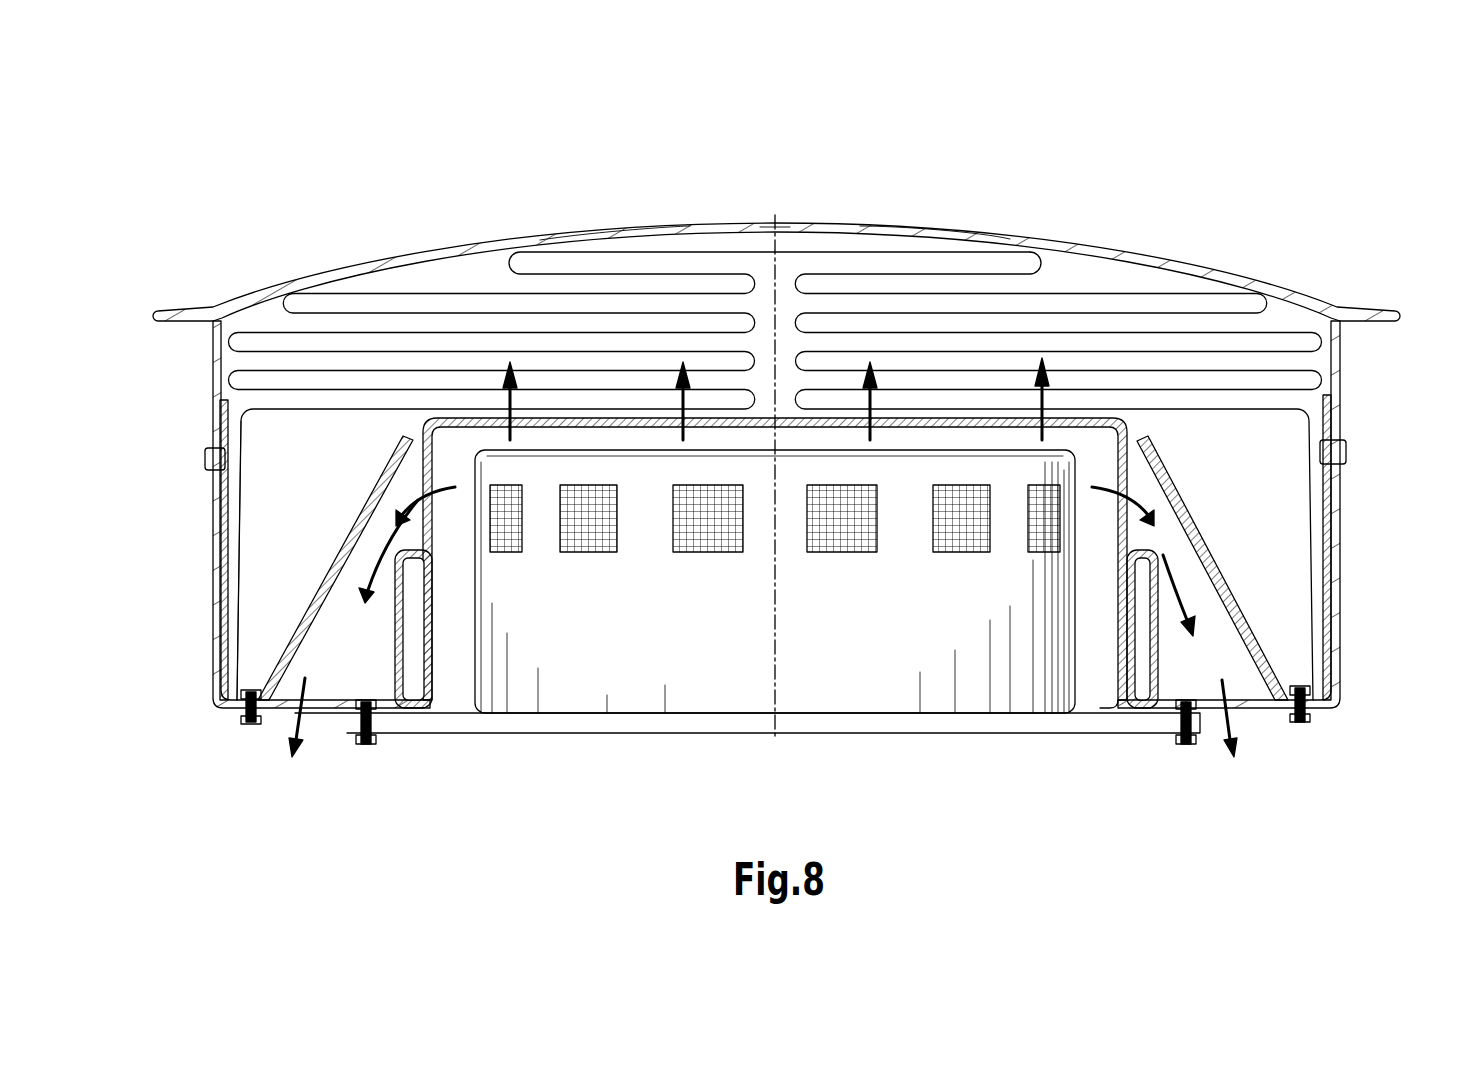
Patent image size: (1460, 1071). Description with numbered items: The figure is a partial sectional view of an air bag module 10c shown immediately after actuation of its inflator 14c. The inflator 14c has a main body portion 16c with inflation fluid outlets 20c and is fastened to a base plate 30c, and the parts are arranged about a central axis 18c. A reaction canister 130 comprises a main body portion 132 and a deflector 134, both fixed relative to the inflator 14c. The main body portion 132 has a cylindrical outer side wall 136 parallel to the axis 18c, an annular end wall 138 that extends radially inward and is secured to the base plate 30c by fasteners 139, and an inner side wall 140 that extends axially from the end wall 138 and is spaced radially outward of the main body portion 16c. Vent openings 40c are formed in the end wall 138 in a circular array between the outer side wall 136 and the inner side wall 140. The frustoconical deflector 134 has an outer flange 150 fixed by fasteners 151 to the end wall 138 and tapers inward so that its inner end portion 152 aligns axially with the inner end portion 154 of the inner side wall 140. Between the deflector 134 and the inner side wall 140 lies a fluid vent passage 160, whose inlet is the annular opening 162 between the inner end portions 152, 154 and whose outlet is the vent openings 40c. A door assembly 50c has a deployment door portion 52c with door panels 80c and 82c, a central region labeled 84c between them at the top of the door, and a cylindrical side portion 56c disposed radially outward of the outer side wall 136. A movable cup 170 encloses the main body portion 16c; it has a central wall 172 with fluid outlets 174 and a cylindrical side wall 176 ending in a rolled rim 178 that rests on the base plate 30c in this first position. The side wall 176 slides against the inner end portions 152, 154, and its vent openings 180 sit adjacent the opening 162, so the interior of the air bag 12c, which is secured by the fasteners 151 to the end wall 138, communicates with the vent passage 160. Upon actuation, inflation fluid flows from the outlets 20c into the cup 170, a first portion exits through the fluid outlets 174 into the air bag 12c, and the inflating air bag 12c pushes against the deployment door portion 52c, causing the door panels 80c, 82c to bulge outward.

The air bag module 10c is at (372, 110).
The door assembly 50c is at (440, 206).
The deployment door portion 52c is at (340, 254).
The air bag 12c is at (606, 265).
The door panel 80c is at (688, 226).
The center seam 84c is at (789, 229).
The door panel 82c is at (900, 229).
The cup 170 is at (957, 405).
The central wall 172 is at (977, 417).
The fluid outlets 174 is at (1022, 426).
The side wall 176 is at (1118, 660).
The rolled rim 178 is at (1130, 707).
The side portion 56c is at (215, 372).
The outer side wall 136 is at (215, 548).
The reaction canister 130 is at (1355, 560).
The main body portion 132 is at (1355, 593).
The inner end portion 152 is at (402, 430).
The annular space or opening 162 is at (400, 485).
The vent openings 180 is at (1127, 487).
The inner side wall 140 is at (395, 652).
The deflector 134 is at (325, 552).
The fluid vent passage 160 is at (340, 658).
The inner end portion 154 is at (475, 588).
The inflation fluid outlets 20c is at (697, 522).
The axis 18c is at (778, 620).
The base plate 30c is at (573, 735).
The inflator 14c is at (662, 700).
The main body portion 16c is at (738, 673).
The outer flange 150 is at (240, 722).
The fasteners 151 is at (243, 700).
The fasteners 139 is at (370, 745).
The end wall 138 is at (277, 712).
The vent openings 40c is at (803, 588).